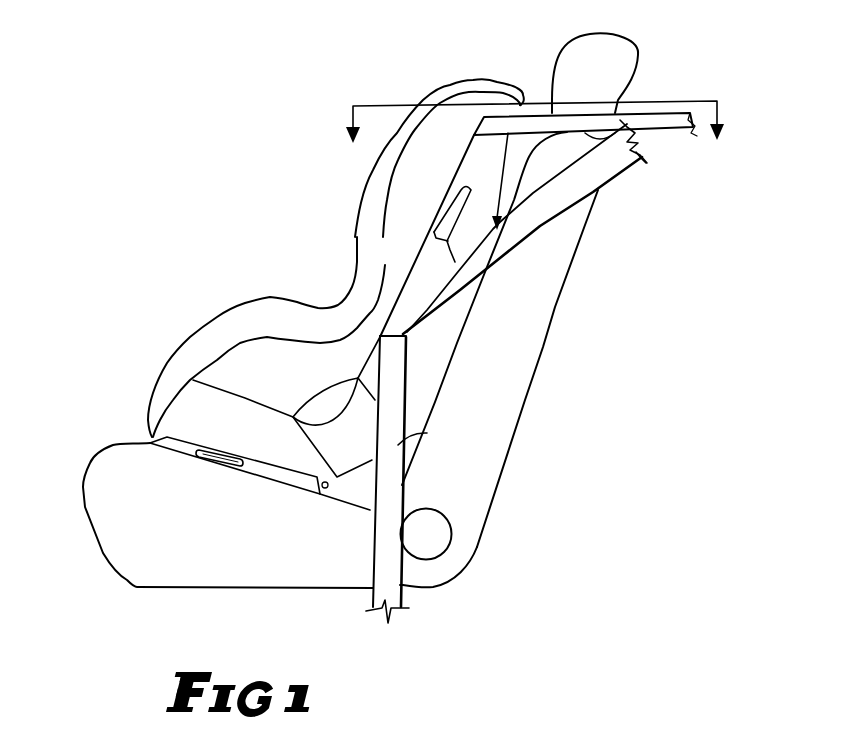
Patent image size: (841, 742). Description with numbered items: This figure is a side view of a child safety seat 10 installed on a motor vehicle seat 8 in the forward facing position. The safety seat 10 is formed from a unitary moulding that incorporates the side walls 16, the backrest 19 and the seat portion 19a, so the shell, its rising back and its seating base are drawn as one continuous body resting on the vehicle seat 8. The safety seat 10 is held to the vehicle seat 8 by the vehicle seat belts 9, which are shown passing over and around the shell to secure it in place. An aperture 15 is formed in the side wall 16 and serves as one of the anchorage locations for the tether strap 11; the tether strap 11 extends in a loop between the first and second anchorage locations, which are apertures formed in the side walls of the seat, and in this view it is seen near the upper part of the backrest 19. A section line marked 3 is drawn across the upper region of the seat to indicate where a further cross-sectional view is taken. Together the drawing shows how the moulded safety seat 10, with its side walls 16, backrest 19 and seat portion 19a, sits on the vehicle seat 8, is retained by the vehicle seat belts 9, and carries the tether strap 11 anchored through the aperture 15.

The safety seat 10 is at (160, 193).
The motor vehicle seat 8 is at (520, 313).
The vehicle seat belts 9 is at (568, 184).
The tether strap 11 is at (655, 118).
The aperture 15 is at (483, 117).
The side wall 16 is at (448, 170).
The backrest 19 is at (447, 208).
The seat portion 19a is at (244, 398).
The section line 3- 3 is at (535, 139).